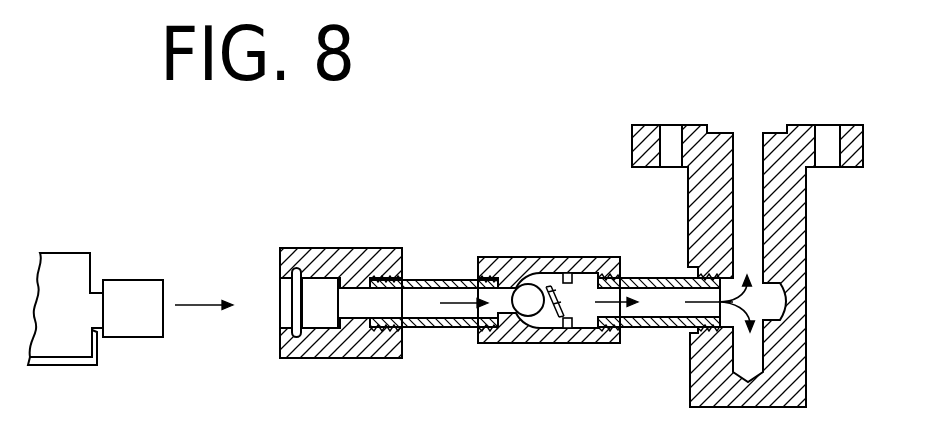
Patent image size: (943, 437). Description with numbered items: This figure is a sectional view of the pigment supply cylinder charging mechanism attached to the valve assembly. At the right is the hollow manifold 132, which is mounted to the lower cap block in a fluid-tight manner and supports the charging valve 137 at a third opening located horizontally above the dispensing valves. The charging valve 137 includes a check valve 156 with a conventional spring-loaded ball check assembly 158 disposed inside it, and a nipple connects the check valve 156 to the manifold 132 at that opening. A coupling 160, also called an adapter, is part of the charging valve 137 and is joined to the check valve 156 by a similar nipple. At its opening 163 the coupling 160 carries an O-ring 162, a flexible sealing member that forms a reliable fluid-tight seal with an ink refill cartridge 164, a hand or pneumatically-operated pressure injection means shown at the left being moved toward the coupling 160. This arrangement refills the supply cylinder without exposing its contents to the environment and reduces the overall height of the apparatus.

The manifold 132 is at (787, 236).
The charging valve 137 is at (682, 200).
The check valve 156 is at (562, 255).
The spring-loaded ball check assembly 158 is at (518, 343).
The coupling 160 is at (342, 267).
The O-ring 162 is at (277, 323).
The opening 163 is at (277, 283).
The ink refill cartridge 164 is at (57, 288).